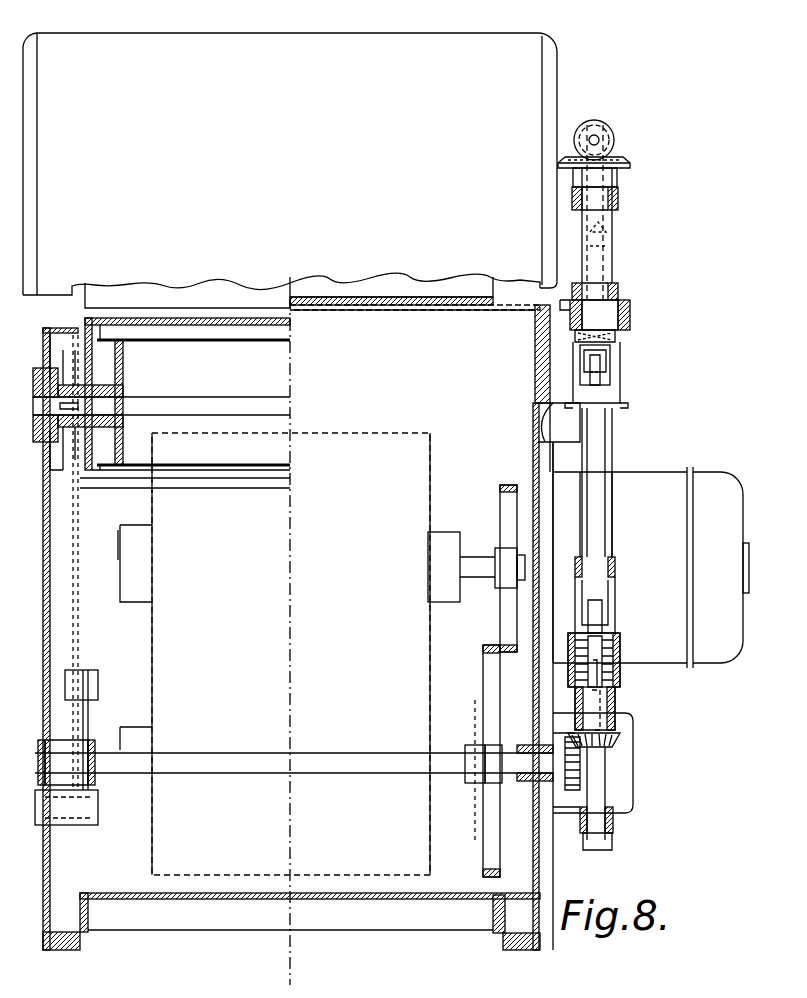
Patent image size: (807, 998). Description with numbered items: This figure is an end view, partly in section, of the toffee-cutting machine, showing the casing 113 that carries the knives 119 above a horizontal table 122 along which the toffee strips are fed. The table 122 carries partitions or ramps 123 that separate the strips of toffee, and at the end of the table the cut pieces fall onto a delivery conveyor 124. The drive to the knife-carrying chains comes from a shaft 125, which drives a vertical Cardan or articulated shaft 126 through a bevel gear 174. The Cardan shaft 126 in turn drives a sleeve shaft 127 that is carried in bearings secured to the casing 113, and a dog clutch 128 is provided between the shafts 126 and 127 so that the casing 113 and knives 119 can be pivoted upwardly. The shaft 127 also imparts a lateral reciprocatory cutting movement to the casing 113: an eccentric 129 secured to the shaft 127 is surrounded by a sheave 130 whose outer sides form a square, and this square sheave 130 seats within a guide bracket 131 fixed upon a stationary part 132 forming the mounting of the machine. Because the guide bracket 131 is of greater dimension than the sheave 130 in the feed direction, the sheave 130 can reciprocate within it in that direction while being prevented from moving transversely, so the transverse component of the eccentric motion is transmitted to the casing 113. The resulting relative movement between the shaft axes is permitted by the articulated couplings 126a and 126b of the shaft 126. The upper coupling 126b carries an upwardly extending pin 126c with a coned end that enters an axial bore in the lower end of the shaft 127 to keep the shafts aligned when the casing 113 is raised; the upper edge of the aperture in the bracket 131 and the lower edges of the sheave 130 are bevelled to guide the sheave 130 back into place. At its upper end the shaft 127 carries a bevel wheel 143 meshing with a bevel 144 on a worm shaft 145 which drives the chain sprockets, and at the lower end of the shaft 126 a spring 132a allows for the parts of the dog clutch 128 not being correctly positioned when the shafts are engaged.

The casing 113 is at (535, 88).
The knives 119 is at (313, 295).
The horizontal table 122 is at (398, 310).
The partitions or ramps 123 is at (432, 298).
The delivery conveyor 124 is at (250, 322).
The shaft 125 is at (346, 760).
The vertical Cardan shaft 126 is at (600, 522).
The articulated coupling 126a is at (600, 590).
The upper articulated coupling 126b is at (600, 380).
The upwardly extending pin 126c is at (598, 258).
The sleeve shaft 127 is at (612, 228).
The dog clutch 128 is at (620, 348).
The eccentric 129 is at (612, 292).
The square sheave 130 is at (625, 306).
The guide bracket 131 is at (628, 332).
The stationary part 132 is at (545, 430).
The spring 132a is at (615, 666).
The bevel wheel 143 is at (630, 165).
The bevel 144 is at (612, 142).
The worm shaft 145 is at (596, 138).
The bevel gear 174 is at (572, 762).